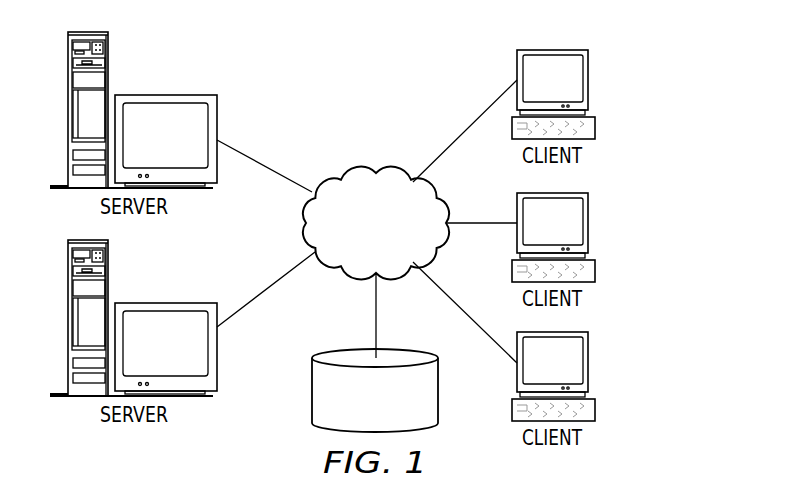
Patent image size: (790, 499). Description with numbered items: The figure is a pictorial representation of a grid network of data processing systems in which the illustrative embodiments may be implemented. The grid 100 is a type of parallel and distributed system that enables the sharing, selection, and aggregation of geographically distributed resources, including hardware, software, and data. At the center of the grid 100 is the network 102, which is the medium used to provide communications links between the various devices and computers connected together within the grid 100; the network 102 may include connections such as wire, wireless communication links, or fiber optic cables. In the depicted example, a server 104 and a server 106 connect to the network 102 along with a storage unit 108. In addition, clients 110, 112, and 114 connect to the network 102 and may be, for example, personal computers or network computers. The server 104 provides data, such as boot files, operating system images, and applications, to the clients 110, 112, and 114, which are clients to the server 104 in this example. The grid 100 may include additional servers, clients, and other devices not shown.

The grid 100 is at (427, 69).
The network 102 is at (348, 172).
The server 104 is at (68, 110).
The server 106 is at (68, 320).
The storage unit 108 is at (312, 400).
The client 110 is at (589, 80).
The client 112 is at (589, 222).
The client 114 is at (589, 362).